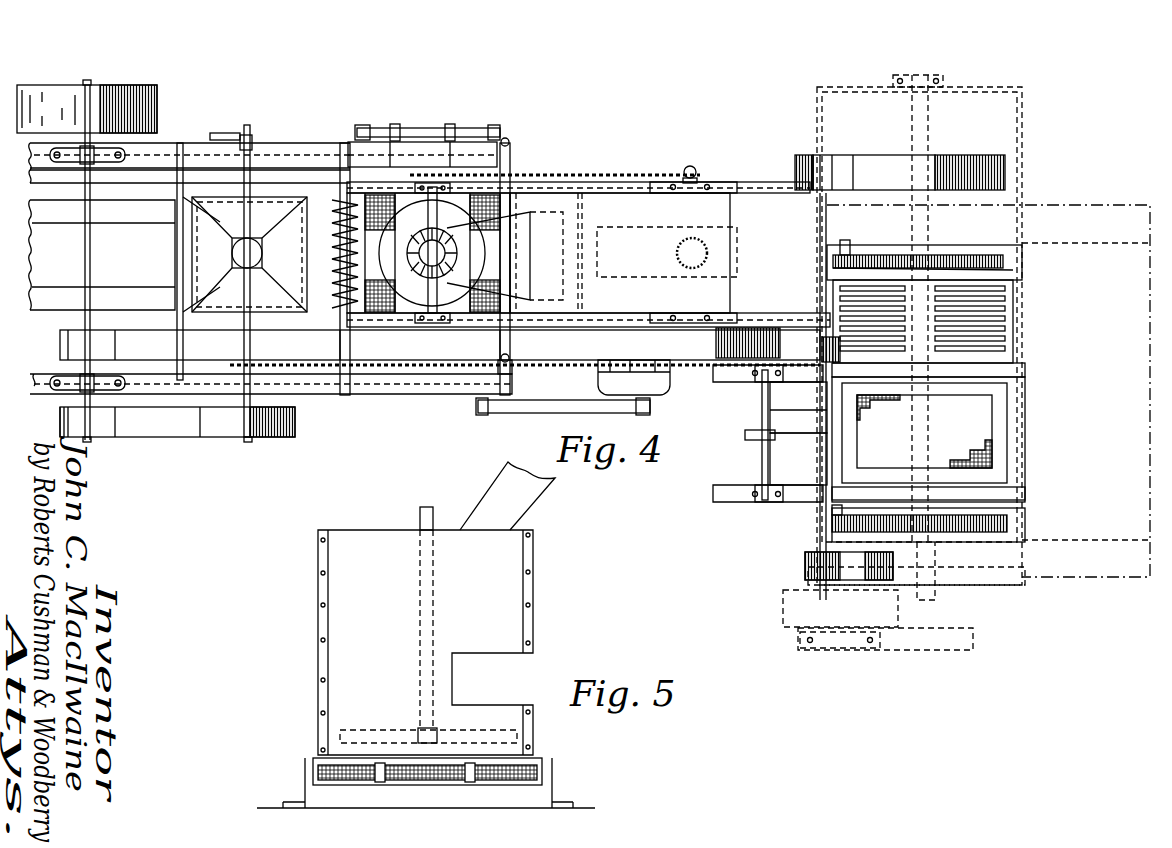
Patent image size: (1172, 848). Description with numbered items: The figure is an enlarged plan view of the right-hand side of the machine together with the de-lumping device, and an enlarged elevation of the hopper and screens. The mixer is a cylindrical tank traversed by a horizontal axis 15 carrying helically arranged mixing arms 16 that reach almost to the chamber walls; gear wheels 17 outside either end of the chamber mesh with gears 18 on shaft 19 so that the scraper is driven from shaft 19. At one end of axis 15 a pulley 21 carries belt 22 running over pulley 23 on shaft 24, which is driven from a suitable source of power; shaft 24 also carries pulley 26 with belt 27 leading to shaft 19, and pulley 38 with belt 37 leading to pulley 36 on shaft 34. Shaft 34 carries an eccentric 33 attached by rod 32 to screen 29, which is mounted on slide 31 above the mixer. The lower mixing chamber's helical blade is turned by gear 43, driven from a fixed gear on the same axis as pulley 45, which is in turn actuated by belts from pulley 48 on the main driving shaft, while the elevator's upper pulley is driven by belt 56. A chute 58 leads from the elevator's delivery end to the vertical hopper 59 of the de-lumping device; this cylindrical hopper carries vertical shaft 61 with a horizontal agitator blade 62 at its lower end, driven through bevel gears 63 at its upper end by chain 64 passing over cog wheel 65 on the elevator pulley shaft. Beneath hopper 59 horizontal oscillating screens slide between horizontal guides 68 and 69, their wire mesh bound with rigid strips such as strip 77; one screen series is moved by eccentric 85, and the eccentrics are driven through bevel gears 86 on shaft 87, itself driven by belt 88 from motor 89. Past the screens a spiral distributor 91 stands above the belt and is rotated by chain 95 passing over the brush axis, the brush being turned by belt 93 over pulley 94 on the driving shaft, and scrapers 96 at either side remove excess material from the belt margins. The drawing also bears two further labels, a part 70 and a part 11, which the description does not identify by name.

In FIG. 4, the pulley 48 is at (157, 109).
In FIG. 4, the shaft 19 is at (85, 320).
In FIG. 4, the rigid metal strip 77 is at (60, 345).
In FIG. 4, the scrapers 96 is at (185, 318).
In FIG. 4, the post 70 is at (340, 380).
In FIG. 4, the spiral blade or distributor 91 is at (330, 238).
In FIG. 4, the belt 93 is at (182, 437).
In FIG. 4, the pulley 94 is at (60, 418).
In FIG. 4, the chain 95 is at (345, 370).
In FIG. 4, the eccentric 85 is at (440, 128).
In FIG. 4, the bevel gears 63 is at (412, 238).
In FIG. 4, the belt 56 is at (432, 345).
In FIG. 4, the vertical hopper 59 is at (462, 300).
In FIG. 5, the vertical hopper 59 is at (533, 595).
In FIG. 4, the chute 58 is at (505, 222).
In FIG. 5, the chute 58 is at (540, 497).
In FIG. 4, the bevel gears 86 is at (508, 140).
In FIG. 4, the shaft 87 is at (512, 370).
In FIG. 4, the chain 64 is at (608, 174).
In FIG. 4, the cog wheel 65 is at (690, 166).
In FIG. 4, the motor 89 is at (600, 390).
In FIG. 4, the belt 88 is at (565, 410).
In FIG. 4, the pulley 36 is at (730, 360).
In FIG. 4, the shaft 34 is at (762, 407).
In FIG. 4, the eccentric 33 is at (755, 440).
In FIG. 4, the belt 37 is at (805, 382).
In FIG. 4, the pulley 38 is at (798, 415).
In FIG. 4, the rod 32 is at (800, 433).
In FIG. 4, the pulley 23 is at (795, 165).
In FIG. 4, the shaft 24 is at (828, 155).
In FIG. 4, the belt 22 is at (880, 155).
In FIG. 4, the pulley 21 is at (968, 155).
In FIG. 4, the gear wheels 17 is at (948, 255).
In FIG. 4, the gears 18 is at (850, 255).
In FIG. 4, the horizontal axis 15 is at (1013, 270).
In FIG. 4, the mixing arms 16 is at (1013, 318).
In FIG. 4, the slide 31 is at (1025, 380).
In FIG. 4, the screen 29 is at (1000, 414).
In FIG. 4, the pulley 26 is at (805, 562).
In FIG. 4, the belt 27 is at (865, 570).
In FIG. 4, the gear 43 is at (1010, 585).
In FIG. 4, the frame 11 is at (925, 600).
In FIG. 4, the pulley 45 is at (783, 610).
In FIG. 5, the vertical shaft 61 is at (433, 508).
In FIG. 5, the horizontal agitator blade 62 is at (362, 730).
In FIG. 5, the horizontal guide 68 is at (313, 771).
In FIG. 5, the horizontal guide 69 is at (552, 768).